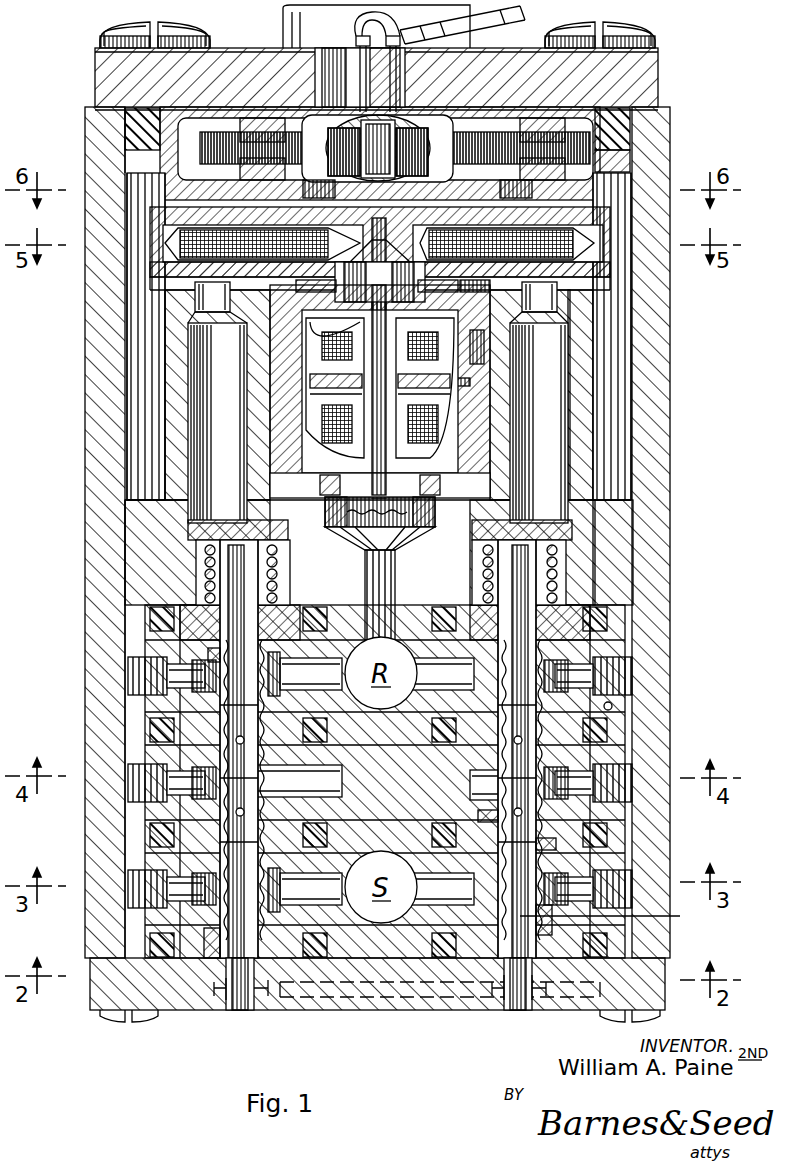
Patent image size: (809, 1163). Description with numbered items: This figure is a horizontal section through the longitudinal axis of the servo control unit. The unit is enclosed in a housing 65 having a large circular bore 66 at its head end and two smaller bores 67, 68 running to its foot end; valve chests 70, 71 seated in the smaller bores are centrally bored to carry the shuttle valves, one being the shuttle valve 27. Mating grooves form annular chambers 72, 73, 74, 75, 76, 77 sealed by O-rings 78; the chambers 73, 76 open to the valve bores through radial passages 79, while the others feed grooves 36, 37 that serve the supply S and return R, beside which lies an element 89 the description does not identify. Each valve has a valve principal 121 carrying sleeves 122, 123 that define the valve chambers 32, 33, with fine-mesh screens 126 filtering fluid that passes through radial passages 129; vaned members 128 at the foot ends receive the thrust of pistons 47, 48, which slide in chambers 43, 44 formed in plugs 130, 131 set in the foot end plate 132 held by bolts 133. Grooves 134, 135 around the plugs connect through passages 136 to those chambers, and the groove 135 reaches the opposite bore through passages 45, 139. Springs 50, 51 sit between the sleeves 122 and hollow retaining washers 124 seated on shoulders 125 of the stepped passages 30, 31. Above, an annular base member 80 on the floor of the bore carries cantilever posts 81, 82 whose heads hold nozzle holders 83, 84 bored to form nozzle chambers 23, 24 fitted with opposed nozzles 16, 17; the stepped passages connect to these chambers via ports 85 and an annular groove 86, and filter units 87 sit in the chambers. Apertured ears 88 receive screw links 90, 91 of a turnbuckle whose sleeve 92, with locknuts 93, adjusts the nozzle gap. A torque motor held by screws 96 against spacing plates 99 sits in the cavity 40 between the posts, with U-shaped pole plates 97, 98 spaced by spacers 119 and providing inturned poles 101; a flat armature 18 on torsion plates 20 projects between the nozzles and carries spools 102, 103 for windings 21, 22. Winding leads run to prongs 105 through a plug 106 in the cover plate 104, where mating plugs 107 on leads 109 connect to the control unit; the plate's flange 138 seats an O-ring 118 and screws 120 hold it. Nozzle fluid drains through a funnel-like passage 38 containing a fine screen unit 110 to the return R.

The nozzle 16 is at (380, 271).
The nozzle 17 is at (403, 279).
The armature 18 is at (390, 216).
The torsion plates 20 is at (404, 398).
The winding 21 is at (335, 388).
The winding 22 is at (425, 388).
The nozzle chamber 23 is at (170, 242).
The nozzle chamber 24 is at (580, 246).
The shuttle valve 27 is at (249, 574).
The stepped passage 30 is at (240, 410).
The stepped passage 31 is at (560, 409).
The valve chamber 32 is at (262, 738).
The valve chamber 33 is at (504, 790).
The supply groove 36 is at (285, 879).
The discharge groove 37 is at (286, 667).
The funnel-like passage 38 is at (380, 583).
The cavity 40 is at (430, 284).
The chamber 43 is at (236, 1026).
The chamber 44 is at (512, 1010).
The passage 45 is at (410, 1010).
The piston 47 is at (216, 1006).
The piston 48 is at (546, 1008).
The spring 50 is at (381, 568).
The spring 51 is at (525, 574).
The housing 65 is at (105, 595).
The large circular bore 66 is at (606, 484).
The smaller bore 67 is at (150, 641).
The smaller bore 68 is at (614, 704).
The valve chest 70 is at (162, 704).
The valve chest 71 is at (596, 640).
The annular chamber 72 is at (134, 673).
The annular chamber 73 is at (140, 788).
The annular chamber 74 is at (140, 892).
The annular chamber 75 is at (620, 666).
The annular chamber 76 is at (620, 770).
The annular chamber 77 is at (620, 878).
The O-ring 78 is at (612, 732).
The radial passage 79 is at (524, 783).
The base member 80 is at (150, 544).
The cantilever post 81 is at (172, 356).
The cantilever post 82 is at (590, 360).
The nozzle holder 83 is at (192, 228).
The nozzle holder 84 is at (592, 232).
The port 85 is at (582, 266).
The annular groove 86 is at (168, 207).
The filter unit 87 is at (205, 256).
The apertured ear 88 is at (252, 137).
The passage 89 is at (312, 681).
The screw link 90 is at (269, 171).
The screw link 91 is at (511, 171).
The turnbuckle sleeve 92 is at (442, 161).
The locknut 93 is at (520, 135).
The screw 96 is at (493, 350).
The pole plate 97 is at (318, 290).
The pole plate 98 is at (459, 284).
The spacing plate 99 is at (380, 391).
The inturned pole 101 is at (349, 486).
The spool 102 is at (380, 385).
The spool 103 is at (423, 486).
The cover plate 104 is at (110, 75).
The prong 105 is at (360, 70).
The plug 106 is at (290, 16).
The mating plug 107 is at (358, 30).
The lead 109 is at (526, 14).
The fine screen unit 110 is at (380, 512).
The O-ring 118 is at (632, 128).
The spacer 119 is at (417, 287).
The screw 120 is at (103, 38).
The valve principal 121 is at (539, 554).
The sleeve 122 is at (212, 652).
The sleeve 123 is at (377, 925).
The spring retaining washer 124 is at (530, 530).
The shoulder 125 is at (252, 520).
The screen 126 is at (481, 814).
The vaned member 128 is at (618, 916).
The radial passage 129 is at (540, 842).
The plug 130 is at (265, 1015).
The plug 131 is at (500, 1010).
The foot end plate 132 is at (382, 1010).
The bolt 133 is at (120, 1026).
The groove 134 is at (228, 1010).
The groove 135 is at (540, 1008).
The passage 136 is at (512, 1010).
The flange 138 is at (598, 158).
The passage 139 is at (305, 1010).